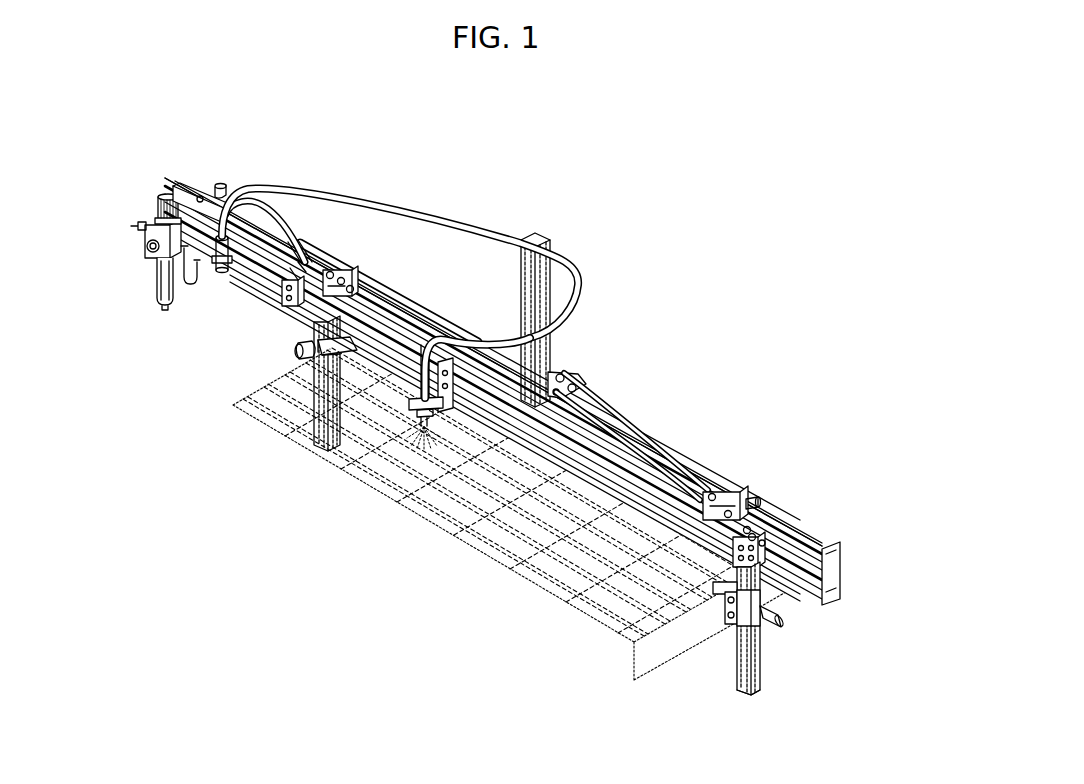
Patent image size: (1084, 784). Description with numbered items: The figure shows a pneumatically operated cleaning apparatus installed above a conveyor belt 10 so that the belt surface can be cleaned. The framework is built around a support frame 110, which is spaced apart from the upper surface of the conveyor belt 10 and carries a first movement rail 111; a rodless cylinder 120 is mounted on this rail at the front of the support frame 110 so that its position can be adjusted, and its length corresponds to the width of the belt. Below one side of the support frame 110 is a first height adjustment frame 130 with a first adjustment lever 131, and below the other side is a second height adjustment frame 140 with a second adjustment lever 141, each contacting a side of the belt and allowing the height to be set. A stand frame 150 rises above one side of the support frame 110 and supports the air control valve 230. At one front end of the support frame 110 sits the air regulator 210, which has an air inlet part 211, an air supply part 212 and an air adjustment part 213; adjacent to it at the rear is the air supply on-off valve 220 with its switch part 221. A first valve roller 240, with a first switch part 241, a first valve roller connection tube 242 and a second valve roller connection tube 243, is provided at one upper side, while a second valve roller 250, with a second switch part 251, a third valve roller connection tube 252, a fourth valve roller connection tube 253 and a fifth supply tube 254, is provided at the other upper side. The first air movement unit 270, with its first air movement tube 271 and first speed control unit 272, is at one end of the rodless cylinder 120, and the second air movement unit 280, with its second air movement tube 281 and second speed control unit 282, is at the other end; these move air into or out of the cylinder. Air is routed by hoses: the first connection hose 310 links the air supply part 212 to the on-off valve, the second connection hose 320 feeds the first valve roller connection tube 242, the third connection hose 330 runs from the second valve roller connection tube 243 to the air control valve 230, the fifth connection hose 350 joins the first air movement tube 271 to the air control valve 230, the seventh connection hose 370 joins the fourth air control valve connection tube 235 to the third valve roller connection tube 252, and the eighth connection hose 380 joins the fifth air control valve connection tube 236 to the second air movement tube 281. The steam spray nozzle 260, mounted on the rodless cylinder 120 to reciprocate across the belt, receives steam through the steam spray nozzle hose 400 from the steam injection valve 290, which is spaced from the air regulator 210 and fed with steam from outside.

The conveyor belt 10 is at (668, 648).
The support frame 110 is at (840, 585).
The first movement rail 111 is at (818, 549).
The rodless cylinder 120 is at (507, 435).
The first height adjustment frame 130 is at (300, 352).
The first adjustment lever 131 is at (297, 358).
The second height adjustment frame 140 is at (760, 660).
The second adjustment lever 141 is at (782, 622).
The stand frame 150 is at (550, 330).
The air regulator 210 is at (150, 274).
The air inlet part 211 is at (140, 226).
The air supply part 212 is at (188, 286).
The air adjustment part 213 is at (167, 197).
The air supply on-off valve 220 is at (200, 193).
The switch part 221 is at (219, 183).
The air control valve 230 is at (645, 386).
The fourth air control valve connection tube 235 is at (575, 389).
The fifth air control valve connection tube 236 is at (562, 376).
The first valve roller 240 is at (406, 152).
The first switch part 241 is at (330, 270).
The first valve roller connection tube 242 is at (341, 277).
The second valve roller connection tube 243 is at (352, 285).
The second valve roller 250 is at (810, 432).
The second switch part 251 is at (728, 510).
The third valve roller connection tube 252 is at (710, 494).
The fourth valve roller connection tube 253 is at (750, 529).
The fifth supply tube 254 is at (748, 505).
The steam spray nozzle 260 is at (409, 410).
The first air movement unit 270 is at (303, 297).
The first air movement tube 271 is at (301, 266).
The first speed control unit 272 is at (293, 278).
The second air movement unit 280 is at (864, 492).
The second air movement tube 281 is at (765, 544).
The second speed control unit 282 is at (755, 536).
The steam injection valve 290 is at (300, 304).
The first connection hose 310 is at (226, 272).
The second connection hose 320 is at (267, 204).
The third connection hose 330 is at (392, 298).
The fifth connection hose 350 is at (490, 343).
The seventh connection hose 370 is at (604, 421).
The eighth connection hose 380 is at (594, 398).
The steam spray nozzle hose 400 is at (473, 234).